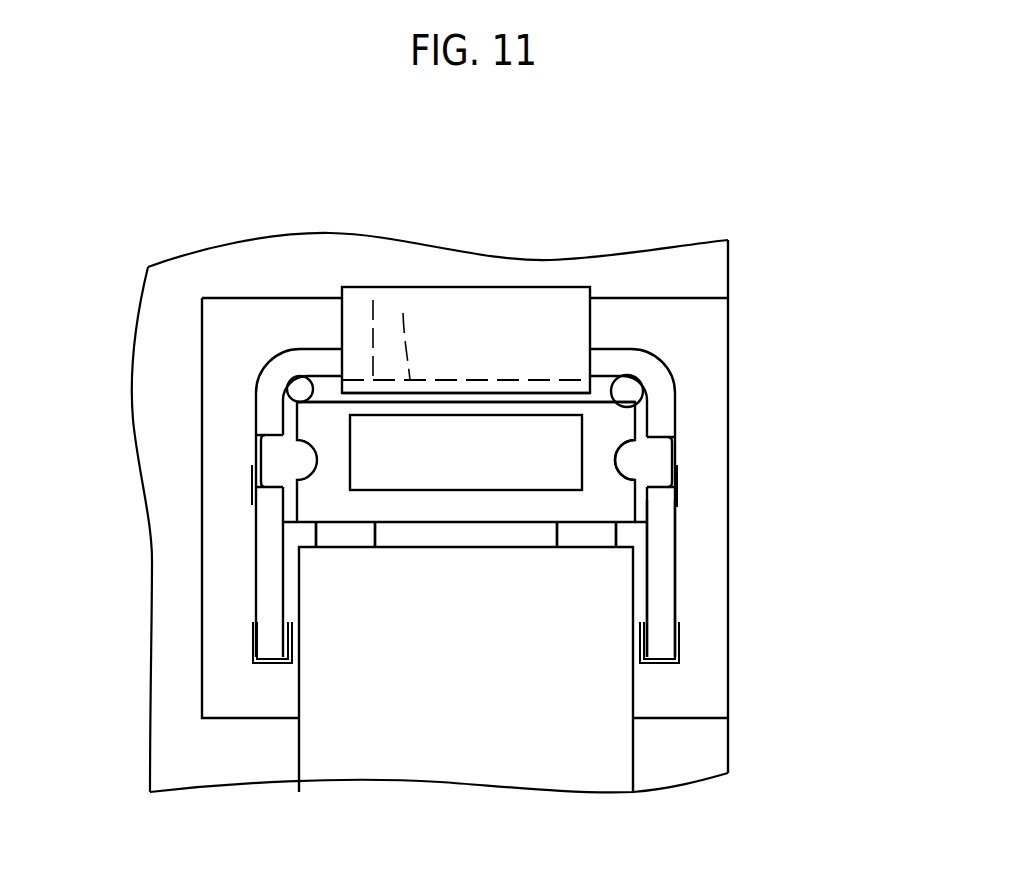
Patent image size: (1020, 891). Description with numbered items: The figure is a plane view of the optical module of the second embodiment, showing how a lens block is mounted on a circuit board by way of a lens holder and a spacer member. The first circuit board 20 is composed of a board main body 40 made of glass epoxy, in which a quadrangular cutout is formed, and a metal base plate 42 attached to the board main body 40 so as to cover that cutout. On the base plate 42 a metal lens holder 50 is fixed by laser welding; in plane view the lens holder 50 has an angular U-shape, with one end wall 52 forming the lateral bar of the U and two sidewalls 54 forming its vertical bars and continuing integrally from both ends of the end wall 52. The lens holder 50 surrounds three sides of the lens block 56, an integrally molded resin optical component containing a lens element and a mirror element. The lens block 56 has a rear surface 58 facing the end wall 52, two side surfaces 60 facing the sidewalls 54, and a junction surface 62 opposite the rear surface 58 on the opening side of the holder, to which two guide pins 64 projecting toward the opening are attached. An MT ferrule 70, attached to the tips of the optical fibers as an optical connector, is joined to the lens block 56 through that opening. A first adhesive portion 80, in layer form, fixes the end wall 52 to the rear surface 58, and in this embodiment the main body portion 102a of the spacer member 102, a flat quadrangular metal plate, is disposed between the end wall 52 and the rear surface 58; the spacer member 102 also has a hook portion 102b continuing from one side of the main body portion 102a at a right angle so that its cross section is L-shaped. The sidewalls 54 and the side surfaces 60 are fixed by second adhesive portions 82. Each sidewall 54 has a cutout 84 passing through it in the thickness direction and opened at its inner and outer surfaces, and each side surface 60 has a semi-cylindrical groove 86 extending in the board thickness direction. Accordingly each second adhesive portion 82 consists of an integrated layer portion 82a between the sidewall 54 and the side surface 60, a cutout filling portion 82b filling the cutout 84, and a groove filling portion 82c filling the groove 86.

The first circuit board 20 is at (731, 263).
The board main body 40 is at (710, 752).
The base plate 42 is at (708, 693).
The lens holder 50 is at (285, 347).
The end wall 52 is at (603, 349).
The sidewall 54 is at (675, 568).
The lens block 56 is at (462, 522).
The rear surface 58 is at (547, 400).
The side surface 60 is at (635, 413).
The junction surface 62 is at (527, 537).
The guide pin 64 is at (352, 537).
The MT ferrule 70 is at (480, 767).
The first adhesive portion 80 is at (440, 400).
The second adhesive portion 82 is at (640, 450).
The layer portion 82a is at (288, 417).
The cutout filling portion 82b is at (273, 465).
The groove filling portion 82c is at (307, 465).
The cutout 84 is at (655, 487).
The groove 86 is at (615, 456).
The spacer member 102 is at (494, 287).
The main body portion 102a is at (373, 300).
The hook portion 102b is at (403, 313).